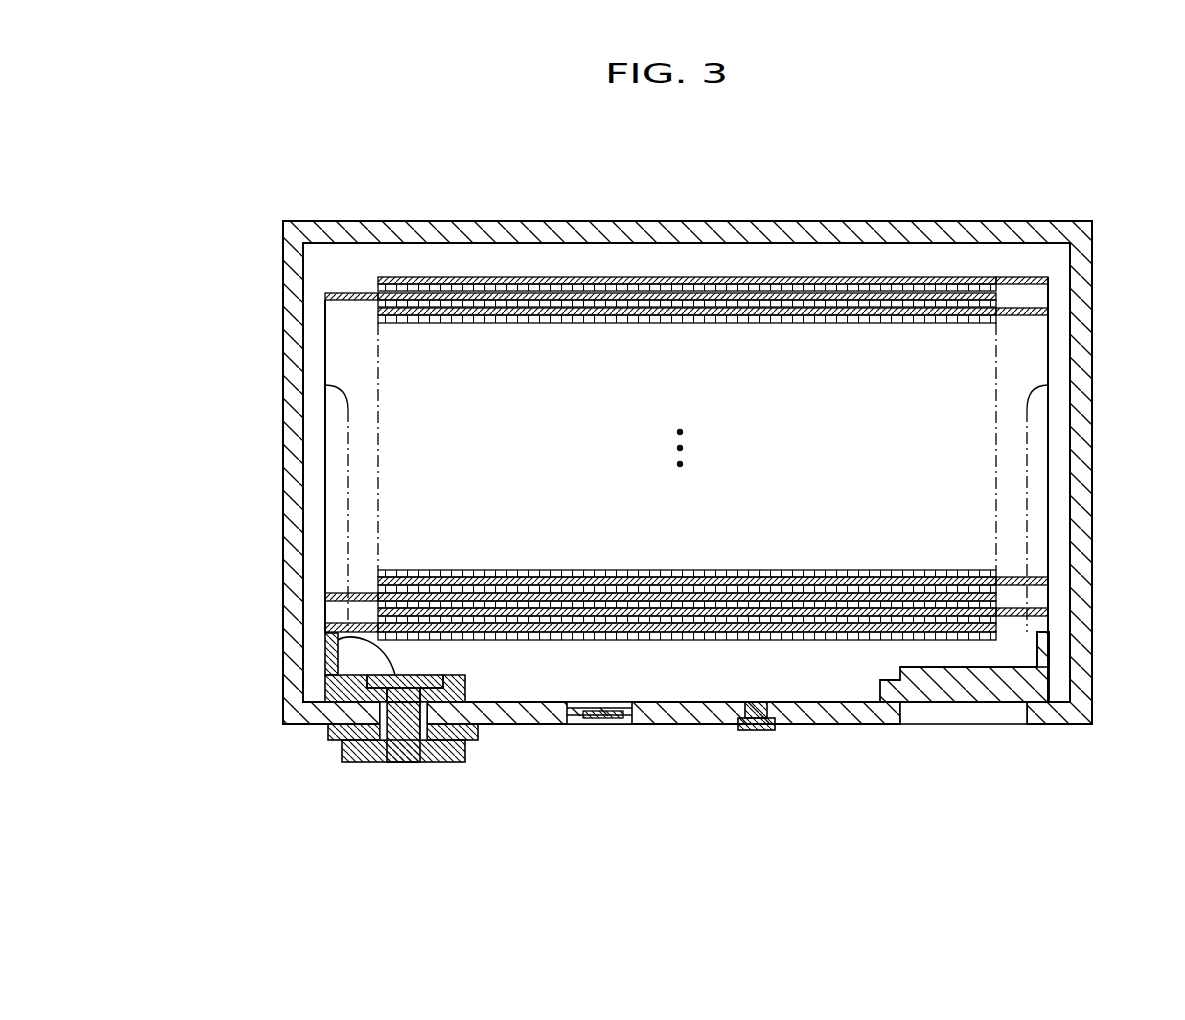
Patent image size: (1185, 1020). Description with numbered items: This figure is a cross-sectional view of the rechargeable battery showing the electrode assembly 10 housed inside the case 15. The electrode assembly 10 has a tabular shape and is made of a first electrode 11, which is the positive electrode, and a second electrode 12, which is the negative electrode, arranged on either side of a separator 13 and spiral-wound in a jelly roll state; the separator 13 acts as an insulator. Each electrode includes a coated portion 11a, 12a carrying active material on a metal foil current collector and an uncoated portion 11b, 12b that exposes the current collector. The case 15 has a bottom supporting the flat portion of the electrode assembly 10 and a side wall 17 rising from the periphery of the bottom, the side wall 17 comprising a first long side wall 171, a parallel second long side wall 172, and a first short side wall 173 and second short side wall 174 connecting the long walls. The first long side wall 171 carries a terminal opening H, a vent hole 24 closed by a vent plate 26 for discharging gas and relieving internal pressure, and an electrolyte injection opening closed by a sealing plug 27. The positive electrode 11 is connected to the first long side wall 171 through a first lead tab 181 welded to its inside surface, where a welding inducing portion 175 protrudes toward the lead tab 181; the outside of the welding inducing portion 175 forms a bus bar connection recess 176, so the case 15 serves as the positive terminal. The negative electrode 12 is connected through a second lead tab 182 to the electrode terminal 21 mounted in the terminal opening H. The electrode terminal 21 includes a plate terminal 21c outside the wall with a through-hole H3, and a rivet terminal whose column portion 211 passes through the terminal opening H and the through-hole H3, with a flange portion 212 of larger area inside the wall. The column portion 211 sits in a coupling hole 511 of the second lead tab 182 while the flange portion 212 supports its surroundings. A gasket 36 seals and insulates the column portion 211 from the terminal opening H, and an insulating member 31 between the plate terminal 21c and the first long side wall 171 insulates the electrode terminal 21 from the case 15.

The electrode assembly 10 is at (686, 413).
The first electrode 11 is at (713, 414).
The coated portion 11a is at (893, 282).
The uncoated portion 11b is at (1022, 436).
The second electrode 12 is at (660, 379).
The coated portion 12a is at (468, 290).
The uncoated portion 12b is at (351, 400).
The separator 13 is at (678, 293).
The case 15 is at (668, 479).
The side wall 17 is at (197, 295).
The first long side wall 171 is at (836, 712).
The second long side wall 172 is at (777, 235).
The first short side wall 173 is at (613, 472).
The second short side wall 174 is at (290, 442).
The welding inducing portion 175 is at (972, 692).
The bus bar connection recess 176 is at (932, 713).
The first lead tab 181 is at (1037, 655).
The second lead tab 182 is at (333, 648).
The electrode terminal 21 is at (408, 764).
The column portion 211 is at (390, 758).
The flange portion 212 is at (365, 677).
The plate terminal 21c is at (450, 760).
The vent hole 24 is at (612, 718).
The vent plate 26 is at (587, 717).
The sealing plug 27 is at (755, 731).
The insulating member 31 is at (480, 740).
The gasket 36 is at (338, 737).
The coupling hole 511 is at (397, 672).
The terminal opening H is at (435, 767).
The through-hole H3 is at (400, 767).